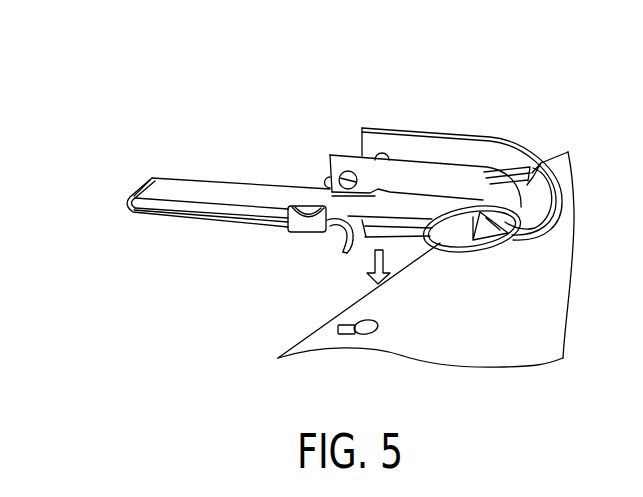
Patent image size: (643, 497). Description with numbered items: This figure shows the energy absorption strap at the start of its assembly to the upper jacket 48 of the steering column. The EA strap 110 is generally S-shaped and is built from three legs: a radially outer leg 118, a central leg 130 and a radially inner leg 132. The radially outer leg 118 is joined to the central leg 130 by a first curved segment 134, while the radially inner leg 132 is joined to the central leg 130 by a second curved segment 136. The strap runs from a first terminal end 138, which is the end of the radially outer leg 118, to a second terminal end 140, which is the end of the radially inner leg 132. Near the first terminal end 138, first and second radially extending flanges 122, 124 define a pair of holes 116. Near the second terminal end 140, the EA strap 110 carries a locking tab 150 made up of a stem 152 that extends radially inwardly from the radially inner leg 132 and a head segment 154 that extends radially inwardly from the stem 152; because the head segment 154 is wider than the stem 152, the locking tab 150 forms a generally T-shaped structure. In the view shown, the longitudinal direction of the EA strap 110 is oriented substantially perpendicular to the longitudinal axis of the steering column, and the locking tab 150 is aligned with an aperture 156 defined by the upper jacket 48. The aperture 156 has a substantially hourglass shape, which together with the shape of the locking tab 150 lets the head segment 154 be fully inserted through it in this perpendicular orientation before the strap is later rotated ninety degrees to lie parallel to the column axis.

The upper jacket 48 is at (472, 347).
The EA strap 110 is at (251, 168).
The pair of holes 116 is at (344, 172).
The radially outer leg 118 is at (474, 172).
The first radially extending flange 122 is at (413, 180).
The second radially extending flange 124 is at (450, 152).
The central leg 130 is at (206, 189).
The radially inner leg 132 is at (226, 226).
The first curved segment 134 is at (530, 207).
The second curved segment 136 is at (126, 216).
The first terminal end 138 is at (362, 127).
The second terminal end 140 is at (340, 246).
The locking tab 150 is at (326, 245).
The stem 152 is at (340, 252).
The head segment 154 is at (370, 250).
The aperture 156 is at (360, 334).